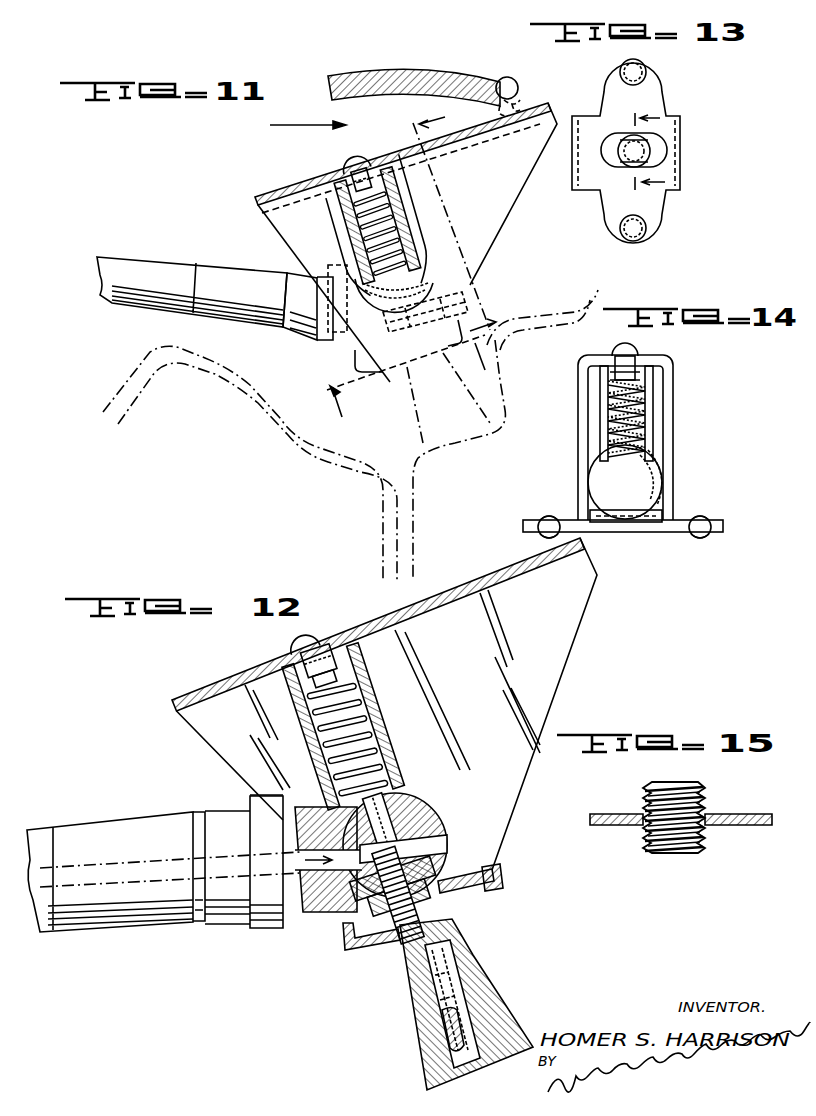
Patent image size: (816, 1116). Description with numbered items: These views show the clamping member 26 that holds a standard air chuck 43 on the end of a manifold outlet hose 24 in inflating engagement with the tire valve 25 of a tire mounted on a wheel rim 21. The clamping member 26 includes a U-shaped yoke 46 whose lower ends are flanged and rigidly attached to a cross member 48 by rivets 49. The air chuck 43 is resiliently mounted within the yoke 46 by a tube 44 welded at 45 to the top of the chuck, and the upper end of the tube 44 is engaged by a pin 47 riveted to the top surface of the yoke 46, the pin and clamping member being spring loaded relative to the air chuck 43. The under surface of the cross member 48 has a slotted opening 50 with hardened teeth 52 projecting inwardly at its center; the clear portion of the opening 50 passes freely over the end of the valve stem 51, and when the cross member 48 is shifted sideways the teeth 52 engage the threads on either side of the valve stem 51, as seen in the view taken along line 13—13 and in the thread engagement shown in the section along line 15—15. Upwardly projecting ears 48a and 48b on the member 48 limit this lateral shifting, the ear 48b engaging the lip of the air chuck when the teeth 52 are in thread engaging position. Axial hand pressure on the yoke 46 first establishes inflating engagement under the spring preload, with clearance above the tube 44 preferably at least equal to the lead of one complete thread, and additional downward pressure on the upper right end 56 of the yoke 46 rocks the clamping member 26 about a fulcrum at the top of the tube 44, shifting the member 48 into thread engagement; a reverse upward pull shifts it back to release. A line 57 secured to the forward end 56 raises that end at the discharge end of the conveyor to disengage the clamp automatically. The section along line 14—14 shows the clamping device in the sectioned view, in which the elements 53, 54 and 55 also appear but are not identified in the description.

In FIG. 11, the section line 13— 13 is at (414, 389).
In FIG. 11, the section line 14— 14 is at (442, 224).
In FIG. 13, the section line 15— 15 is at (650, 152).
In FIG. 11, the wheel rim 21 is at (352, 470).
In FIG. 11, the manifold outlet hose 24 is at (165, 272).
In FIG. 12, the manifold outlet hose 24 is at (52, 933).
In FIG. 12, the tire valve 25 is at (500, 995).
In FIG. 11, the clamping member 26 is at (290, 222).
In FIG. 12, the clamping member 26 is at (490, 710).
In FIG. 11, the air chuck 43 is at (333, 328).
In FIG. 12, the air chuck 43 is at (275, 925).
In FIG. 11, the tube 44 is at (405, 240).
In FIG. 14, the tube 44 is at (655, 415).
In FIG. 12, the tube 44 is at (369, 727).
In FIG. 12, the weld 45 is at (407, 802).
In FIG. 14, the U-shaped yoke 46 is at (597, 356).
In FIG. 12, the U-shaped yoke 46 is at (463, 591).
In FIG. 14, the pin 47 is at (640, 364).
In FIG. 12, the pin 47 is at (323, 648).
In FIG. 13, the cross member 48 is at (608, 200).
In FIG. 14, the cross member 48 is at (716, 532).
In FIG. 13, the ear 48a is at (574, 172).
In FIG. 12, the ear 48a is at (351, 950).
In FIG. 13, the ear 48b is at (681, 176).
In FIG. 14, the ear 48b is at (637, 533).
In FIG. 12, the ear 48b is at (496, 884).
In FIG. 11, the rivets 49 is at (418, 323).
In FIG. 13, the rivets 49 is at (645, 73).
In FIG. 14, the rivets 49 is at (548, 516).
In FIG. 13, the slotted opening 50 is at (602, 148).
In FIG. 15, the valve stem 51 is at (706, 804).
In FIG. 12, the valve stem 51 is at (455, 920).
In FIG. 13, the hardened teeth 52 is at (648, 154).
In FIG. 15, the hardened teeth 52 is at (632, 827).
In FIG. 11, the coil spring 53 is at (408, 247).
In FIG. 14, the coil spring 53 is at (598, 400).
In FIG. 12, the nut 54 is at (488, 866).
In FIG. 12, the shaft 55 is at (440, 840).
In FIG. 11, the upper right end of yoke 56 is at (492, 251).
In FIG. 12, the upper right end of yoke 56 is at (557, 655).
In FIG. 11, the line 57 is at (409, 91).